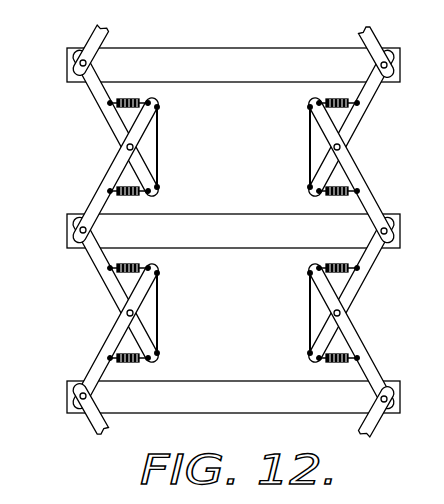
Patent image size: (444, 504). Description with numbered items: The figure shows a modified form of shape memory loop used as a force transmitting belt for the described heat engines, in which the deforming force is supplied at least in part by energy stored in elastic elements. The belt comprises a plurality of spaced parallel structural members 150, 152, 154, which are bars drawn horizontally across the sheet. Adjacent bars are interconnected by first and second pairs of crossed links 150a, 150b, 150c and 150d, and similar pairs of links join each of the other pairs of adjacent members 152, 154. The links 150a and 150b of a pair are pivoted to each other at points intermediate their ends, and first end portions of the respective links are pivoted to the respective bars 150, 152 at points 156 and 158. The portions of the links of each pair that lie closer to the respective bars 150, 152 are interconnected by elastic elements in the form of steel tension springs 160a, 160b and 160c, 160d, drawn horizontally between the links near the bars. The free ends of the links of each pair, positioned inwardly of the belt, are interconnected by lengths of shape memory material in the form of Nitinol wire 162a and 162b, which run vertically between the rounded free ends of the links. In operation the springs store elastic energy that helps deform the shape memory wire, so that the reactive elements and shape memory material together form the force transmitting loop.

The structural member 150 is at (292, 48).
The structural member 152 is at (272, 249).
The structural member 154 is at (243, 381).
The pivot point 156 is at (90, 64).
The pivot point 158 is at (91, 230).
The link 150a is at (116, 117).
The link 150b is at (113, 160).
The link 150c is at (365, 107).
The link 150d is at (359, 178).
The steel tension spring 160a is at (150, 100).
The steel tension spring 160b is at (133, 198).
The steel tension spring 160c is at (312, 100).
The steel tension spring 160d is at (327, 197).
The Nitinol wire 162a is at (160, 131).
The Nitinol wire 162b is at (307, 150).